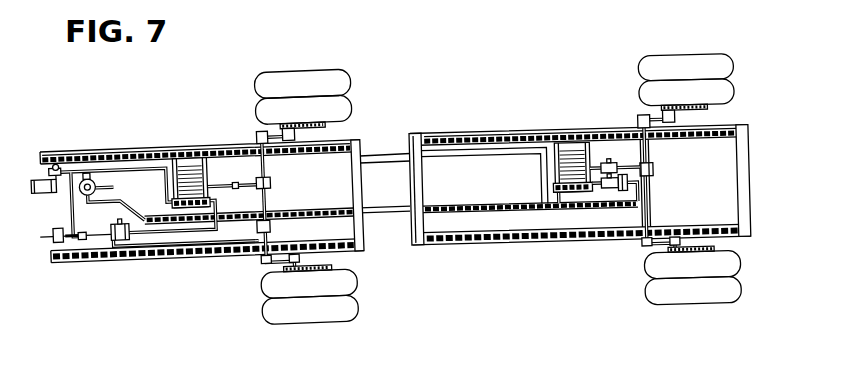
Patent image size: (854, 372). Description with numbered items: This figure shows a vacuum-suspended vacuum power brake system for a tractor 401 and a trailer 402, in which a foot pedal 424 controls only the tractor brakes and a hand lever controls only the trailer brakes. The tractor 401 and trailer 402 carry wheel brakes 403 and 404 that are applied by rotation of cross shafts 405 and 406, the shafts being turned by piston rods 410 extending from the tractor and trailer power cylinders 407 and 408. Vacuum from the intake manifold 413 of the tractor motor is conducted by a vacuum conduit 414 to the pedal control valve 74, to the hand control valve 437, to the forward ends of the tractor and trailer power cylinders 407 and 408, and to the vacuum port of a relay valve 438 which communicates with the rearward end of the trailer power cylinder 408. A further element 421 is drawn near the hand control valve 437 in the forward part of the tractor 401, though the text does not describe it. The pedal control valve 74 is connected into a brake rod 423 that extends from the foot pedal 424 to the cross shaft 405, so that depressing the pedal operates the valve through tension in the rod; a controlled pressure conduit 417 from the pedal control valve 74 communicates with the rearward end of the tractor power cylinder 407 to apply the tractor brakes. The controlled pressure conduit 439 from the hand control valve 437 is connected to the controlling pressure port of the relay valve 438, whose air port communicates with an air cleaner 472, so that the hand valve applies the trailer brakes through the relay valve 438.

The pedal control valve 74 is at (116, 244).
The tractor 401 is at (181, 143).
The trailer 402 is at (473, 130).
The wheel brakes 403 is at (327, 123).
The wheel brakes 404 is at (711, 107).
The cross shaft 405 is at (270, 182).
The cross shaft 406 is at (650, 211).
The tractor power cylinder 407 is at (197, 178).
The trailer power cylinder 408 is at (573, 150).
The piston rods 410 is at (261, 190).
The intake manifold 413 is at (33, 181).
The vacuum conduit 414 is at (389, 157).
The controlled pressure conduit 417 is at (191, 244).
The pressure regulator 421 is at (111, 186).
The brake rod 423 is at (152, 235).
The foot pedal 424 is at (55, 243).
The hand control valve 437 is at (88, 173).
The relay valve 438 is at (611, 197).
The controlled pressure conduit 439 is at (390, 213).
The air cleaner 472 is at (606, 168).